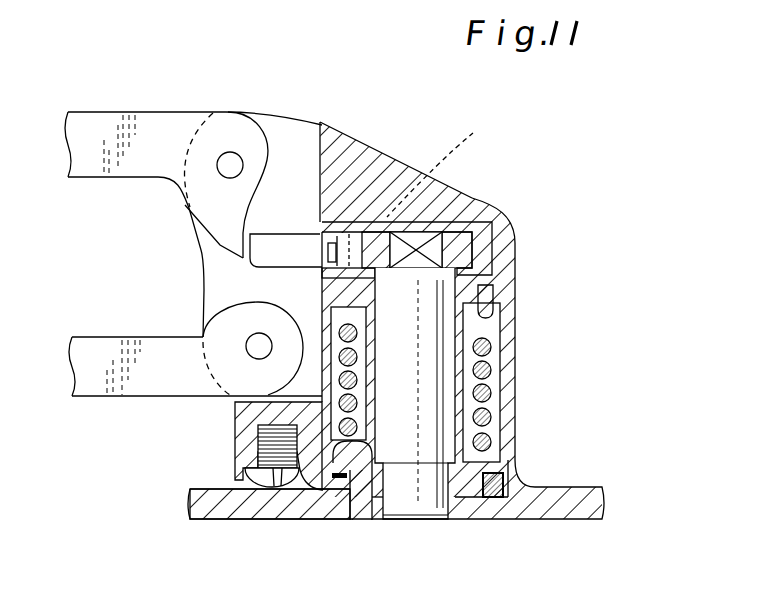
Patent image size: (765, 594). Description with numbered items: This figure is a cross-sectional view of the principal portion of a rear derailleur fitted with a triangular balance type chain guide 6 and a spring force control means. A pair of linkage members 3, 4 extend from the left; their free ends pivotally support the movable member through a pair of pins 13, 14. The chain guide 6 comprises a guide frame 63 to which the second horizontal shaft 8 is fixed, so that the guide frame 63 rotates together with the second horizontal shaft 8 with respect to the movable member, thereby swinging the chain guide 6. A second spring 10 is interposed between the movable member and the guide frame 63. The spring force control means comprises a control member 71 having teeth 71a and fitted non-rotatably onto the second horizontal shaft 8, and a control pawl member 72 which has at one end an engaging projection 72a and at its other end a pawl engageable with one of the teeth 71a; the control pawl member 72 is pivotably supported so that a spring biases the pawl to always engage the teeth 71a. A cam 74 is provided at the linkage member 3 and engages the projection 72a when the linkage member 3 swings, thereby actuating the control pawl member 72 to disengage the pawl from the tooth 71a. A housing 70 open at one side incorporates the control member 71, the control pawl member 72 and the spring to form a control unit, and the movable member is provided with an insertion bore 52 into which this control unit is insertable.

The linkage member 3 is at (143, 137).
The linkage member 4 is at (122, 402).
The pin 13 is at (231, 163).
The pin 14 is at (257, 348).
The cam 74 is at (220, 244).
The control pawl member 72 is at (307, 250).
The engaging projection 72a is at (271, 245).
The teeth 71a is at (450, 162).
The control member 71 is at (458, 226).
The housing 70 is at (472, 203).
The insertion bore 52 is at (490, 258).
The second horizontal shaft 8 is at (440, 372).
The second spring 10 is at (495, 437).
The chain guide 6 is at (573, 486).
The guide frame 63 is at (297, 519).